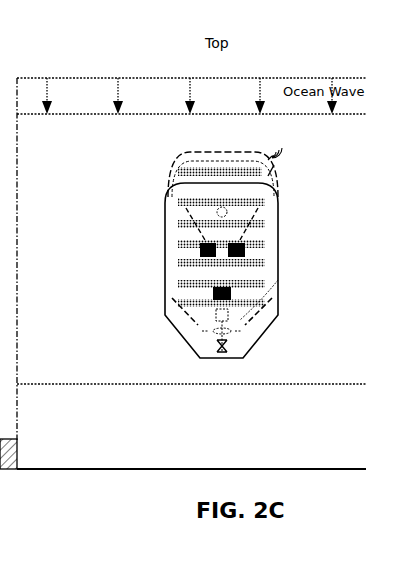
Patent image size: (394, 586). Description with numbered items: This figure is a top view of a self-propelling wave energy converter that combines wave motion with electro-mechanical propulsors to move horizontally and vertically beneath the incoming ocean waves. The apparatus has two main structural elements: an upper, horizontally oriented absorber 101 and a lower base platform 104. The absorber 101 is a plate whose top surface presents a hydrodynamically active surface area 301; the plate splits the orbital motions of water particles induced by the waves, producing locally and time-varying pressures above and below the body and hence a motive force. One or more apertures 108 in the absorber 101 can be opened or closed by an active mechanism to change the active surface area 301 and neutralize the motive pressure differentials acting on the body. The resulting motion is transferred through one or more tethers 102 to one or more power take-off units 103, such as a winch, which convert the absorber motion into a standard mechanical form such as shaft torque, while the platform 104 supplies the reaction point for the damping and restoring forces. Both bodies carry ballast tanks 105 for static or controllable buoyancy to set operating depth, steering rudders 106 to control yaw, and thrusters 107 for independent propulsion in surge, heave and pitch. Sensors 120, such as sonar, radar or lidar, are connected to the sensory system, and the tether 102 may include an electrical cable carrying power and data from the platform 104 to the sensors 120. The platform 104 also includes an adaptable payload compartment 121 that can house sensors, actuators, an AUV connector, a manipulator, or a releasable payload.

The absorber 101 is at (165, 212).
The tether 102 is at (250, 288).
The power take-off unit 103 is at (178, 265).
The lower base platform 104 is at (172, 168).
The ballast tank 105 is at (178, 172).
The steering rudder 106 is at (212, 294).
The thruster 107 is at (232, 336).
The aperture 108 is at (262, 228).
The sensor 120 is at (282, 151).
The adaptable payload compartment 121 is at (272, 172).
The hydrodynamically active surface area 301 is at (278, 280).